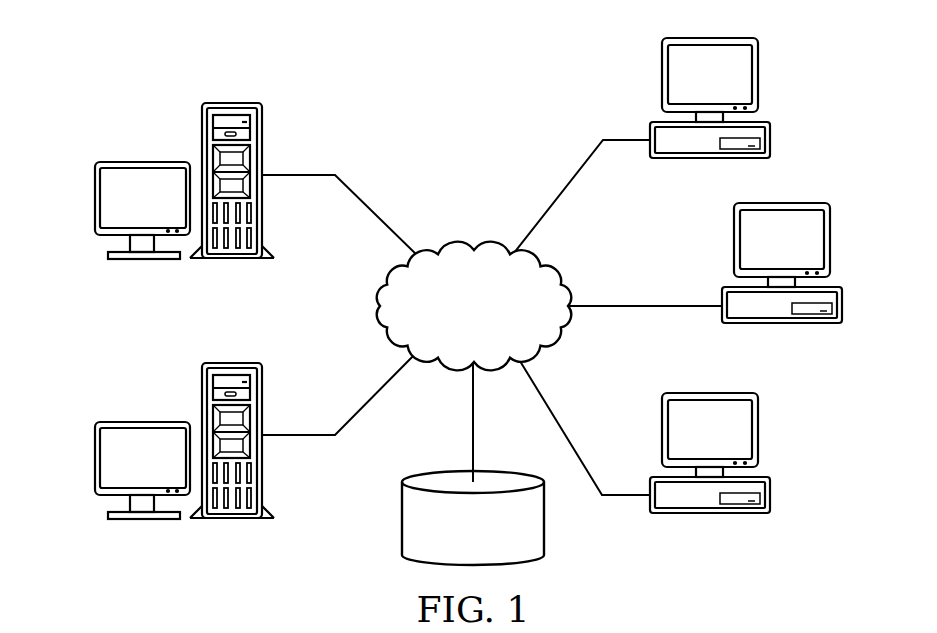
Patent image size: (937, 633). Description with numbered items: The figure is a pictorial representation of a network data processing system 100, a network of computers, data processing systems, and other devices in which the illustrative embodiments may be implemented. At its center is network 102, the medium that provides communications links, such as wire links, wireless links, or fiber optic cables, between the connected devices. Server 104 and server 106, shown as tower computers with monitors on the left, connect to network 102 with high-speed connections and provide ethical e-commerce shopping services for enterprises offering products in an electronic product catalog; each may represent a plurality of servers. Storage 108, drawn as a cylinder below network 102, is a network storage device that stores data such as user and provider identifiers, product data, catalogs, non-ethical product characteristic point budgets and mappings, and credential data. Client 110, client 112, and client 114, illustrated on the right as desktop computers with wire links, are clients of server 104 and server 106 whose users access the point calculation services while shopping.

The network data processing system 100 is at (333, 80).
The network 102 is at (447, 252).
The server 104 is at (95, 200).
The server 106 is at (95, 457).
The storage 108 is at (402, 516).
The client 110 is at (772, 130).
The client 112 is at (843, 315).
The client 114 is at (771, 503).